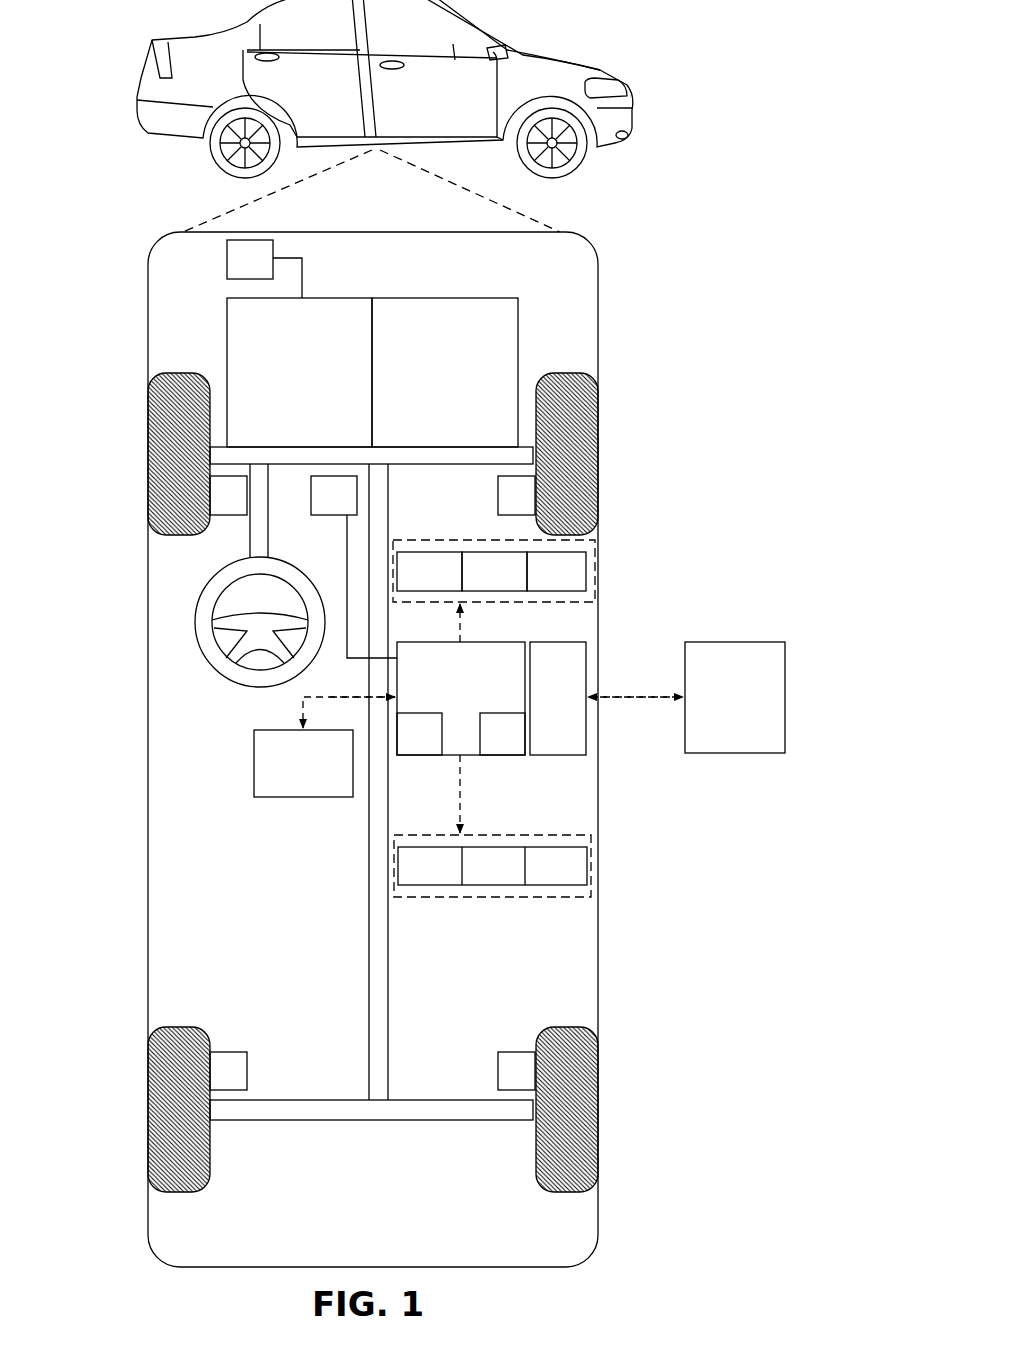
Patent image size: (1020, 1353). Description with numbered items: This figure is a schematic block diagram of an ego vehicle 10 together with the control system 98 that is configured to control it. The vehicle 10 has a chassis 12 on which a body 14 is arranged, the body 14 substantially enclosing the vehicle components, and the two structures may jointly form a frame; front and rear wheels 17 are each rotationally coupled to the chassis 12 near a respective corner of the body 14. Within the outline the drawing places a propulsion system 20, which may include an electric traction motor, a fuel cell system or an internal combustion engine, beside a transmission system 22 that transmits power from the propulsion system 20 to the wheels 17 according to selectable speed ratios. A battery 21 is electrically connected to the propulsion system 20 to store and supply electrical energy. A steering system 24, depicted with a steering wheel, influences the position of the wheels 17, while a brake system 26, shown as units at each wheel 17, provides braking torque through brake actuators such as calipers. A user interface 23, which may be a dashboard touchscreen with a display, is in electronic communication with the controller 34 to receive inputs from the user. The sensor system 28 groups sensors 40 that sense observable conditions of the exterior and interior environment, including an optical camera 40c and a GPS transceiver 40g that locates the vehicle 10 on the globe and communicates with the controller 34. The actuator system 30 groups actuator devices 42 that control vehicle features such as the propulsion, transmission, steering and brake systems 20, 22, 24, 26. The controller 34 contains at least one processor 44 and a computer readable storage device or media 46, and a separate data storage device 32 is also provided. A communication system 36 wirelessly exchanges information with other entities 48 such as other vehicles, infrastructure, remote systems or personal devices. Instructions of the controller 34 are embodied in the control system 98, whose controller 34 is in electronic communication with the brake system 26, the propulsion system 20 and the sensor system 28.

The vehicle 10 is at (148, 70).
The chassis 12 is at (369, 965).
The body 14 is at (148, 822).
The front and rear wheels 17 is at (183, 373).
The propulsion system 20 is at (285, 389).
The battery 21 is at (232, 240).
The transmission system 22 is at (431, 389).
The user interface 23 is at (320, 510).
The steering system 24 is at (279, 536).
The brake system 26 is at (242, 510).
The sensor system 28 is at (470, 540).
The actuator system 30 is at (480, 897).
The data storage device 32 is at (289, 779).
The controller 34 is at (446, 693).
The communication system 36 is at (544, 713).
The sensors 40 is at (415, 587).
The optical camera 40c is at (473, 587).
The GPS transceiver 40g is at (535, 587).
The actuator devices 42 is at (416, 881).
The processor 44 is at (406, 750).
The computer readable storage device or media 46 is at (489, 750).
The other entities 48 is at (721, 713).
The control system 98 is at (703, 272).